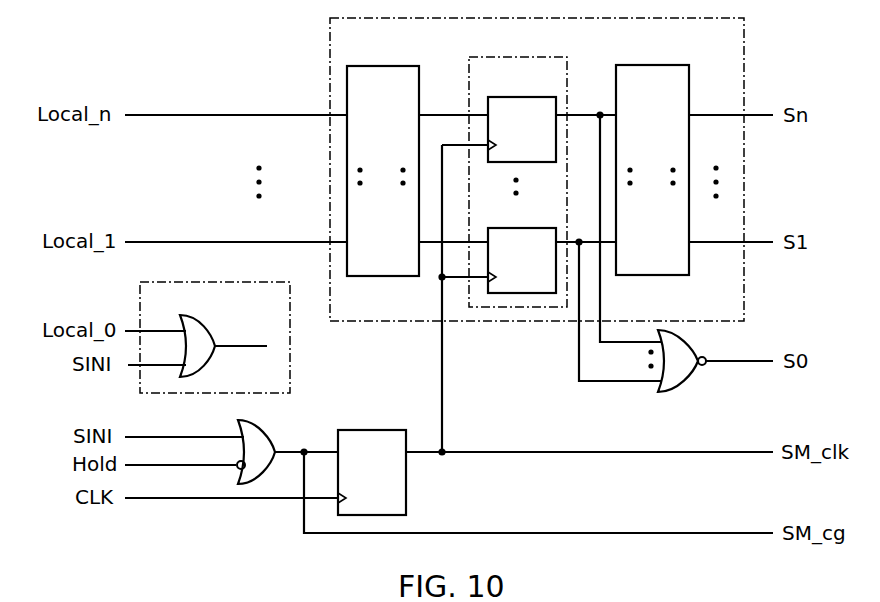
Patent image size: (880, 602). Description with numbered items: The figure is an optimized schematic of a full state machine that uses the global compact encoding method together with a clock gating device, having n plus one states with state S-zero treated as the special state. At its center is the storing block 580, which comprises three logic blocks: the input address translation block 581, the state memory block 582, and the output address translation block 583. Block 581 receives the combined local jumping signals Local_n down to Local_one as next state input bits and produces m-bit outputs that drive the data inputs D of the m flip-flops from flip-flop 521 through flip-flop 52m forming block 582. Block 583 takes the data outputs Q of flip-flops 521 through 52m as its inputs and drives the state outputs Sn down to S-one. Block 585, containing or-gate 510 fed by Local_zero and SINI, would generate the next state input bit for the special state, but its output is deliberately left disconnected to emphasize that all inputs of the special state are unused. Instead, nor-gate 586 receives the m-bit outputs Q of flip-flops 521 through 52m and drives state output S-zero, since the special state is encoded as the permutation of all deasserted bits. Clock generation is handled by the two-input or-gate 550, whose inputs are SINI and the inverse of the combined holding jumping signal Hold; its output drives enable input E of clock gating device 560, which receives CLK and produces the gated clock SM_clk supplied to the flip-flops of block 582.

The storing block 580 is at (328, 64).
The input address translation block 581 is at (355, 63).
The state memory block 582 is at (497, 55).
The output address translation block 583 is at (623, 63).
The flip-flop 52m is at (497, 94).
The flip-flop 521 is at (497, 226).
The next state input bit generating block for special state S0 585 is at (162, 282).
The or-gate 510 is at (200, 315).
The 2-input or-gate 550 is at (247, 421).
The clock gating device 560 is at (365, 429).
The nor-gate 586 is at (683, 392).